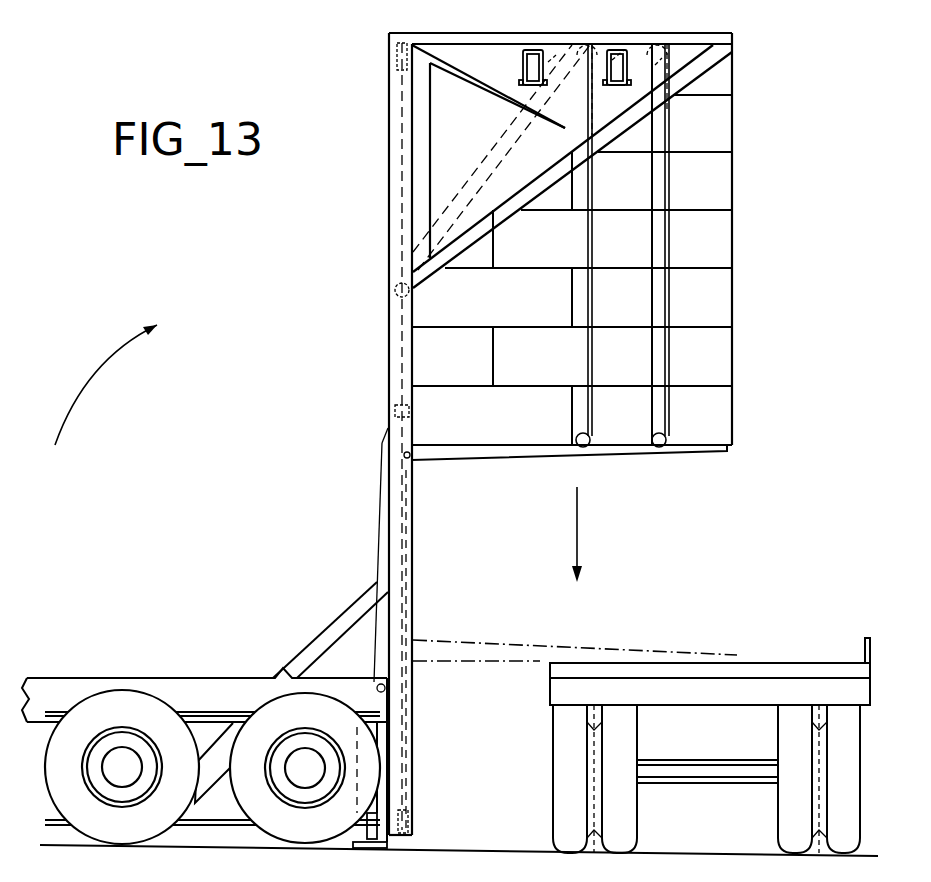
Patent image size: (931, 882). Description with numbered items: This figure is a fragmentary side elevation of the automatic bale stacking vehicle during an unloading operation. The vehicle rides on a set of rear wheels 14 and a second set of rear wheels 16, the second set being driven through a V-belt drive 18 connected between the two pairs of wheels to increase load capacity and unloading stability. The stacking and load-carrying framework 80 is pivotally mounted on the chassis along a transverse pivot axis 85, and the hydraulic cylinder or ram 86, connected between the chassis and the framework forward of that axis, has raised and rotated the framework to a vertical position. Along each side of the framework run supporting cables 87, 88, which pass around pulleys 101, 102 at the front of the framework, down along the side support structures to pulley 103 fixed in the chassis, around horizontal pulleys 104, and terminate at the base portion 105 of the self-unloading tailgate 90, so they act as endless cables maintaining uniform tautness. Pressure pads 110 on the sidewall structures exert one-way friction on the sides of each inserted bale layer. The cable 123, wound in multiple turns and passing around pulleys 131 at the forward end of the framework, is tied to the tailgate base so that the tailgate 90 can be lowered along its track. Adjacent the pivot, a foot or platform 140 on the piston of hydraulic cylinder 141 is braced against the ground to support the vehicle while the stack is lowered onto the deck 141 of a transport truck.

The rear wheels 14 is at (58, 810).
The second set of rear wheels 16 is at (263, 832).
The V-belt drive 18 is at (203, 826).
The stacking and load-carrying framework 80 is at (57, 678).
The pivot axis 85 is at (378, 685).
The hydraulic cylinder or ram 86 is at (217, 750).
The supporting cable 87 is at (670, 242).
The supporting cable 88 is at (594, 240).
The self-unloading tailgate 90 is at (628, 460).
The pulley 101 is at (665, 36).
The pulley 102 is at (598, 36).
The pulley 103 is at (395, 292).
The horizontal pulleys 104 is at (410, 827).
The base portion 105 is at (412, 462).
The pressure pads 110 is at (617, 63).
The cable 123 is at (402, 184).
The pulleys 131 is at (397, 50).
The foot or platform 140 is at (387, 847).
The hydraulic cylinder 141 is at (368, 807).